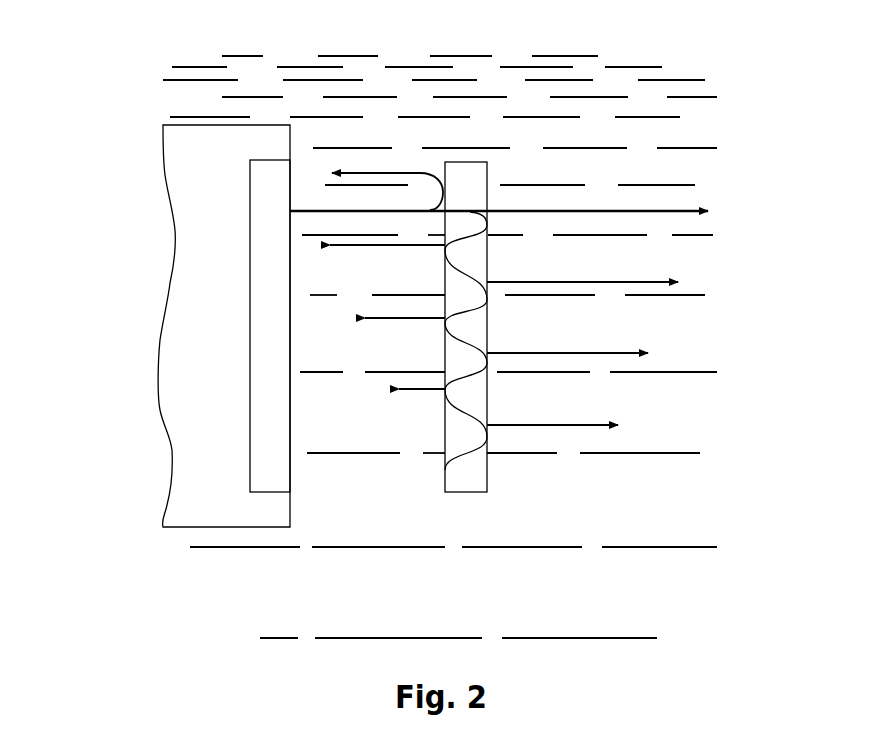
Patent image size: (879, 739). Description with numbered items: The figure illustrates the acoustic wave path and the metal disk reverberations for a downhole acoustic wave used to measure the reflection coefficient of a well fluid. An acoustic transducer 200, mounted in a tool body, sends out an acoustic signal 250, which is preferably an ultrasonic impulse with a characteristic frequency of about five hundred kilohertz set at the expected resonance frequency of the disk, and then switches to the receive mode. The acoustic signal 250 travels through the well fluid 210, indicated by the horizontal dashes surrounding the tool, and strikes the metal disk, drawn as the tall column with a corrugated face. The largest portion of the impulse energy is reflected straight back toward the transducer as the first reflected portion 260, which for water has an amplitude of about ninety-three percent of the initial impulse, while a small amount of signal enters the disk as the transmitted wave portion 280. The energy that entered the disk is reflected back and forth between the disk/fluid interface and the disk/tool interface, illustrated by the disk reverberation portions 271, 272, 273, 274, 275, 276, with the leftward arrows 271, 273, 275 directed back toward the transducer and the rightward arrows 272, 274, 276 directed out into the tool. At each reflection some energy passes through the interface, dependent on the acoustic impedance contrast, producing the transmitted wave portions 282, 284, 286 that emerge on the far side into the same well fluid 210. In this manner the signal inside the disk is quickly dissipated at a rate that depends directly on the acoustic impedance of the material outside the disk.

The acoustic transducer 200 is at (193, 315).
The well fluid 210 is at (627, 512).
The acoustic signal 250 is at (317, 210).
The first reflected portion 260 is at (378, 173).
The disk reverberation portion 271 is at (418, 247).
The disk reverberation portion 272 is at (487, 275).
The disk reverberation portion 273 is at (415, 320).
The disk reverberation portion 274 is at (487, 337).
The disk reverberation portion 275 is at (428, 390).
The disk reverberation portion 276 is at (487, 410).
The transmitted wave portion 280 is at (663, 211).
The transmitted wave portion 282 is at (607, 281).
The transmitted wave portion 284 is at (595, 353).
The transmitted wave portion 286 is at (590, 425).